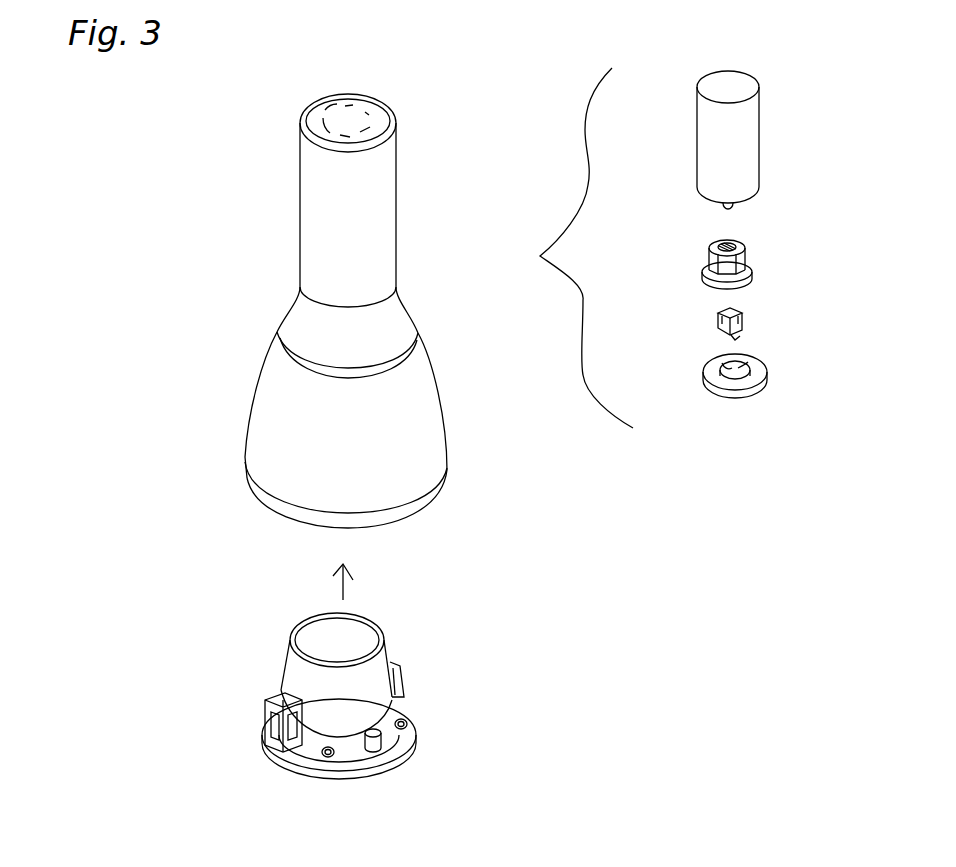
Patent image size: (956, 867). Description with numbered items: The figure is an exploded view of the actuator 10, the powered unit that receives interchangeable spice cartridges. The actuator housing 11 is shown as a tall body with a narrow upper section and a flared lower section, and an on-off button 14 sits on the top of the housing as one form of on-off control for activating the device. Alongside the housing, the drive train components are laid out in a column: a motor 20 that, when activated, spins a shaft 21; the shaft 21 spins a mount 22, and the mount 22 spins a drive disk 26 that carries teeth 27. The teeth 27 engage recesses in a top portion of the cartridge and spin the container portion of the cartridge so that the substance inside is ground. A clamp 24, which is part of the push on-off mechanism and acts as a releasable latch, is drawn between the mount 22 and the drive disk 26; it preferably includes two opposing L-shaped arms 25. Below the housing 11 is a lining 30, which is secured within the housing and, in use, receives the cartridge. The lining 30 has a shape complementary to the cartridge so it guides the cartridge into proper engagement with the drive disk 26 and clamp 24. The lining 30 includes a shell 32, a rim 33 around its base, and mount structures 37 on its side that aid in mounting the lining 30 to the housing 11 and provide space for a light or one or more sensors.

The actuator 10 is at (273, 190).
The actuator housing 11 is at (297, 304).
The on-off button 14 is at (362, 118).
The motor 20 is at (759, 141).
The shaft 21 is at (733, 209).
The mount 22 is at (746, 255).
The clamp 24 is at (744, 320).
The L-shaped arm 25 is at (740, 337).
The drive disk 26 is at (765, 367).
The teeth 27 is at (710, 365).
The lining 30 is at (455, 609).
The shell 32 is at (352, 713).
The rim 33 is at (382, 768).
The mount structures 37 is at (405, 690).